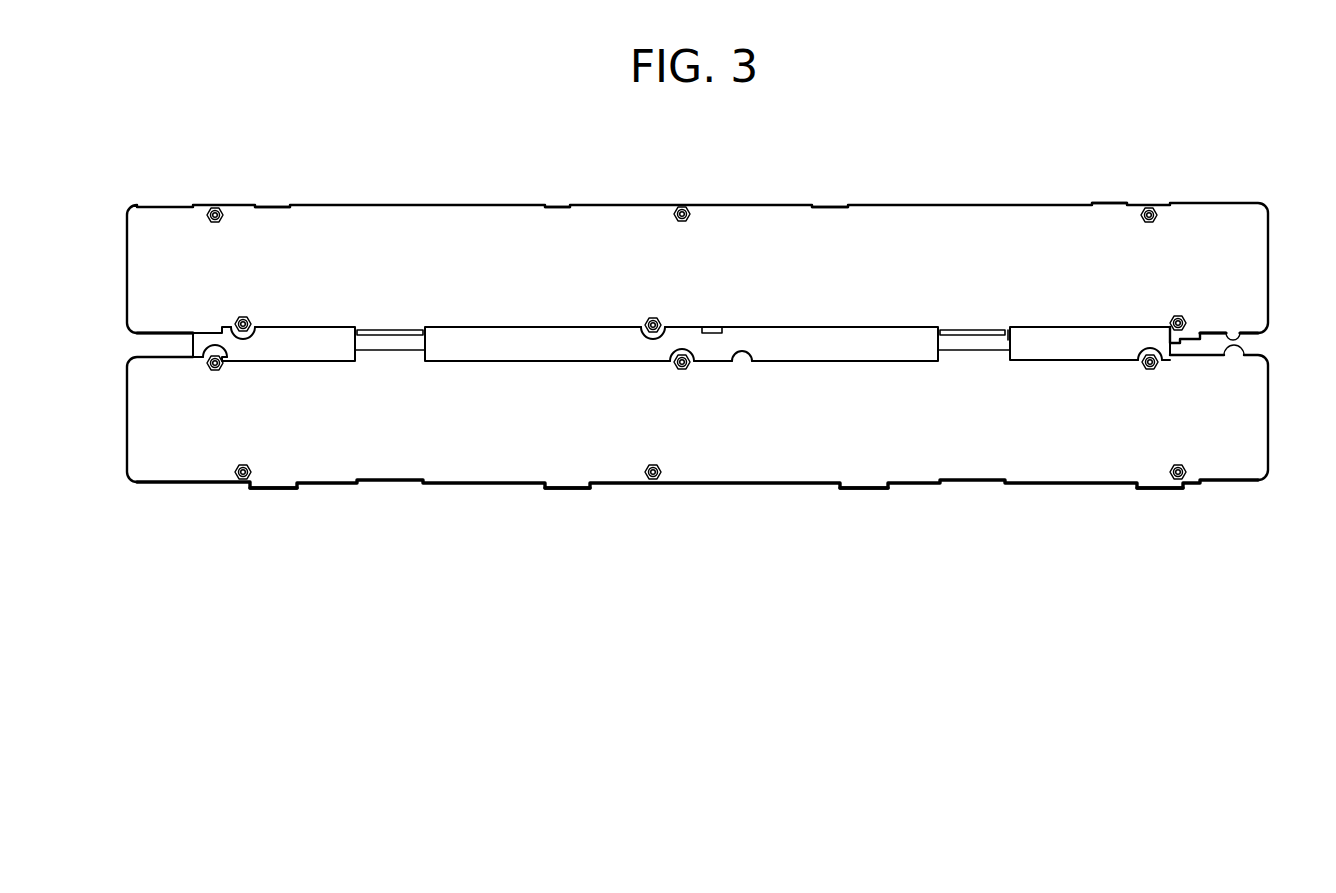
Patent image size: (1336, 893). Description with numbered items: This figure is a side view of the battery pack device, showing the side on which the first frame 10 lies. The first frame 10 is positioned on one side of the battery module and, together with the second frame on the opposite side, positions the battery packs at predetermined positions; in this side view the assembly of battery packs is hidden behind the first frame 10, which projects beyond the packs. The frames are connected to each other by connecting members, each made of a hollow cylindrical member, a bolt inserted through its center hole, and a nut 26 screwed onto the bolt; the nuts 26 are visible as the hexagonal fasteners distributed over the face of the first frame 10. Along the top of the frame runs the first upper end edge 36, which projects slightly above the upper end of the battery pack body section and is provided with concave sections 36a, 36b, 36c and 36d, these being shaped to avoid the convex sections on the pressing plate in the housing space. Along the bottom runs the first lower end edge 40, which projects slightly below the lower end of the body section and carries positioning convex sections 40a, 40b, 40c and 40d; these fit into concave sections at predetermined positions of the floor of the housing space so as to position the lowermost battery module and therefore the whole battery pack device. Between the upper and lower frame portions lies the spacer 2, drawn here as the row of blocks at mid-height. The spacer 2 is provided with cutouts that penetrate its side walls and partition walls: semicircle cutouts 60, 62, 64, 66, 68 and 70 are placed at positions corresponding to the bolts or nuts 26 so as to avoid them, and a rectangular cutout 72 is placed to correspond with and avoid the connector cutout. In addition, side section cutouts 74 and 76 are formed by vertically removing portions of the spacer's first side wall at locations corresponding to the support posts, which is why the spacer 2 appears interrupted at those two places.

The spacer 2 is at (330, 343).
The first frame 10 is at (721, 347).
The nut 26 is at (236, 318).
The first upper end edge 36 is at (964, 204).
The concave section 36a is at (1108, 205).
The concave section 36b is at (832, 204).
The concave section 36c is at (553, 204).
The concave section 36d is at (277, 205).
The first lower end edge 40 is at (1042, 490).
The positioning convex section 40a is at (1157, 490).
The positioning convex section 40b is at (863, 490).
The positioning convex section 40c is at (563, 490).
The positioning convex section 40d is at (272, 490).
The semicircle cutout 60 is at (225, 370).
The semicircle cutout 62 is at (250, 318).
The semicircle cutout 64 is at (648, 318).
The semicircle cutout 66 is at (675, 370).
The semicircle cutout 68 is at (742, 365).
The semicircle cutout 70 is at (1143, 368).
The rectangular cutout 72 is at (713, 327).
The side section cutout 74 is at (357, 440).
The side section cutout 76 is at (942, 440).